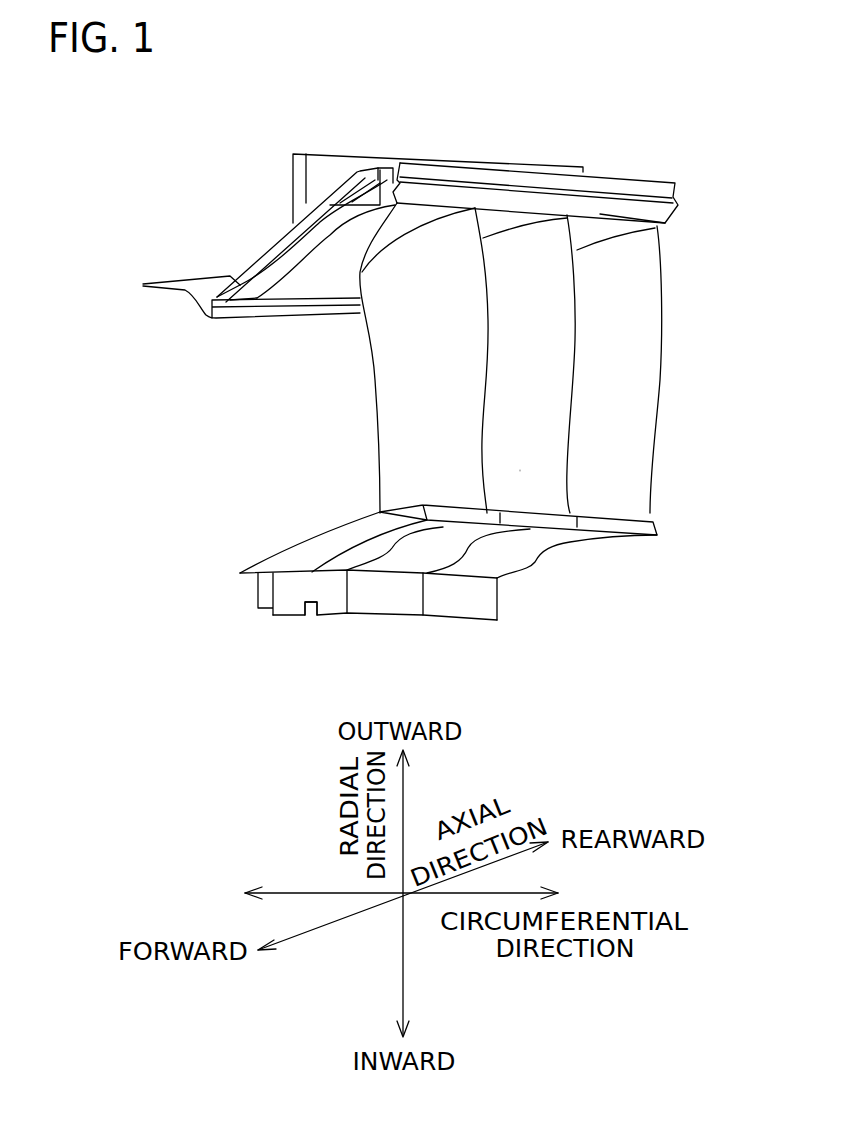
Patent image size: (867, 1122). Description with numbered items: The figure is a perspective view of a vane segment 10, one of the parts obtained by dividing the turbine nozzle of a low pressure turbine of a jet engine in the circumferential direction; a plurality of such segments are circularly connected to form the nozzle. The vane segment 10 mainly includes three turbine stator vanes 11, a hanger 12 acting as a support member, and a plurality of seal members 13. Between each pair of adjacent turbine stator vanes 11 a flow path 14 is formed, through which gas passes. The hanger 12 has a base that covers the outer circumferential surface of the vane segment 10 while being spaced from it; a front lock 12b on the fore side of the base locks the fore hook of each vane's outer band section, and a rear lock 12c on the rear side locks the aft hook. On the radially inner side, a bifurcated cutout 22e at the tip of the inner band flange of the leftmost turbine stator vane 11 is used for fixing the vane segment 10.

The vane segment 10 is at (622, 148).
The turbine stator vane 11 is at (665, 312).
The hanger 12 is at (440, 229).
The front lock 12b is at (265, 318).
The rear lock 12c is at (633, 212).
The seal member 13 is at (251, 259).
The flow path 14 is at (518, 463).
The bifurcated cutout 22e is at (312, 617).